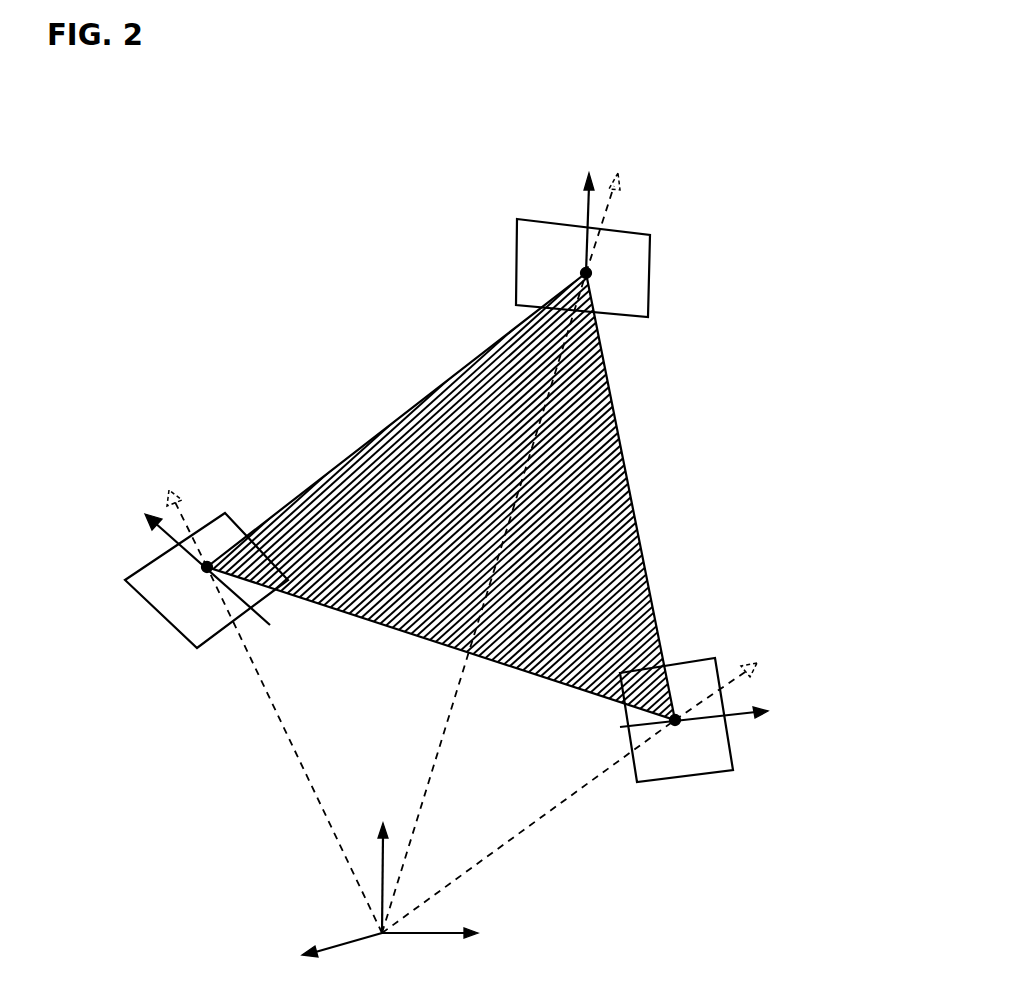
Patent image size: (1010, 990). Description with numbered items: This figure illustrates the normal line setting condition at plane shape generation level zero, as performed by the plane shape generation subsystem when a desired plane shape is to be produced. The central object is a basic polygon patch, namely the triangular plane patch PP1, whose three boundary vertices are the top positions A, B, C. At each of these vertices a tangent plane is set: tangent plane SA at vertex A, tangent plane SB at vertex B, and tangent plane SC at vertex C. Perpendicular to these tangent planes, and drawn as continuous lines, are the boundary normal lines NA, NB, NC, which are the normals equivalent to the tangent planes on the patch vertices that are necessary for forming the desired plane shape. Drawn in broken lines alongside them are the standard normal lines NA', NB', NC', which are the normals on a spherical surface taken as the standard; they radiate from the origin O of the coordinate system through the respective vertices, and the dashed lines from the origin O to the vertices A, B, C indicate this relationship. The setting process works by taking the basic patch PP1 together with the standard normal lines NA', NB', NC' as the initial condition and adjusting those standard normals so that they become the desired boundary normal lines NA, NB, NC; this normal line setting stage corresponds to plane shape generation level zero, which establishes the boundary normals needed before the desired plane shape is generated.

The triangular plane patch PP1 is at (427, 392).
The boundary vertex A is at (584, 273).
The boundary vertex B is at (207, 567).
The boundary vertex C is at (675, 720).
The tangent plane SA is at (650, 283).
The tangent plane SB is at (173, 633).
The tangent plane SC is at (658, 785).
The boundary normal line NA is at (471, 201).
The boundary normal line NB is at (145, 541).
The boundary normal line NC is at (751, 748).
The standard normal line NA' is at (723, 201).
The standard normal line NB' is at (233, 476).
The standard normal line NC' is at (785, 637).
The origin O is at (441, 624).